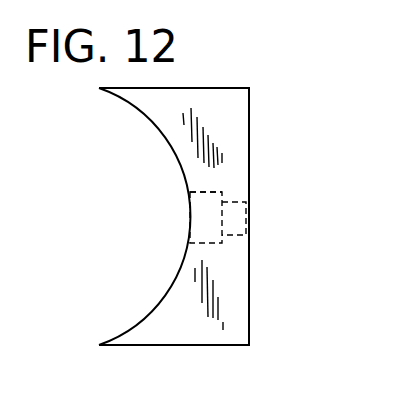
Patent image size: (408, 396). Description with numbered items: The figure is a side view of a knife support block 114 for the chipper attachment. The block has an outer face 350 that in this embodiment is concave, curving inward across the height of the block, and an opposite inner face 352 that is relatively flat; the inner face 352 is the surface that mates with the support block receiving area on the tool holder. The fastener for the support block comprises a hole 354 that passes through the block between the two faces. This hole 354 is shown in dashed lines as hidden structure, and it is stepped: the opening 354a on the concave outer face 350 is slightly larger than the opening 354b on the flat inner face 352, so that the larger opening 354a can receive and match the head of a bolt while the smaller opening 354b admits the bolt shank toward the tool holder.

The knife support block 114 is at (216, 67).
The outer face 350 is at (122, 168).
The inner face 352 is at (249, 162).
The hole 354 is at (190, 233).
The opening on the outer face 354a is at (212, 192).
The opening on the inner face 354b is at (254, 220).